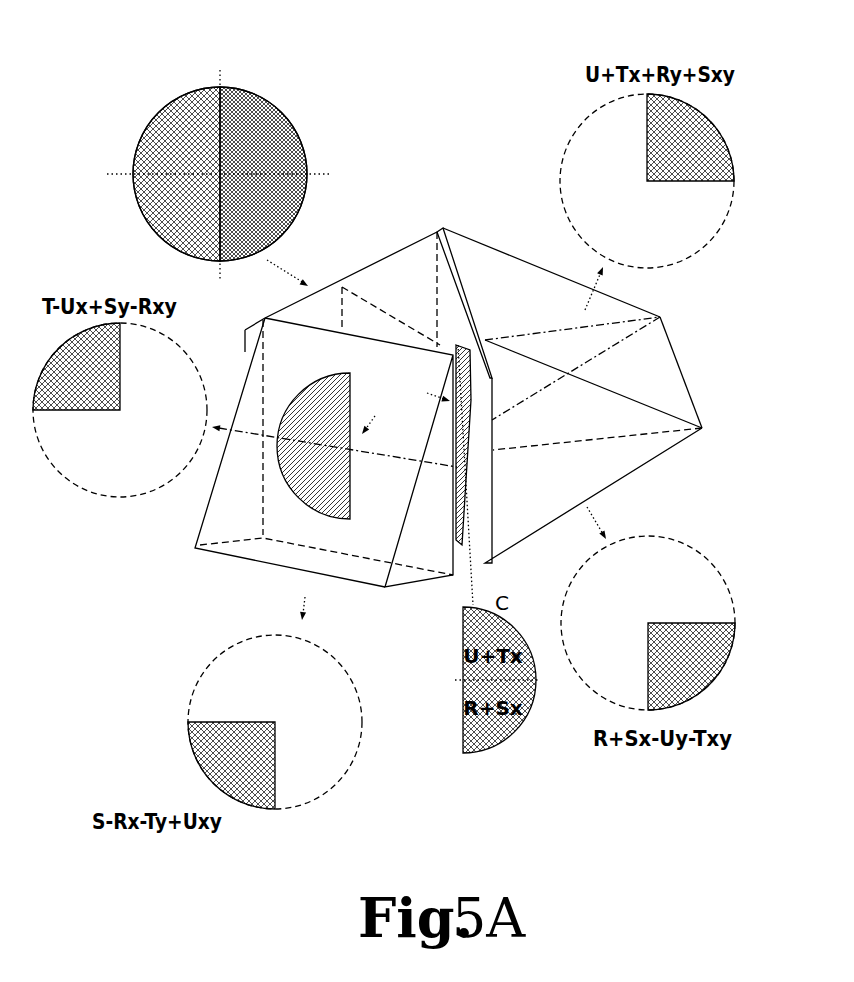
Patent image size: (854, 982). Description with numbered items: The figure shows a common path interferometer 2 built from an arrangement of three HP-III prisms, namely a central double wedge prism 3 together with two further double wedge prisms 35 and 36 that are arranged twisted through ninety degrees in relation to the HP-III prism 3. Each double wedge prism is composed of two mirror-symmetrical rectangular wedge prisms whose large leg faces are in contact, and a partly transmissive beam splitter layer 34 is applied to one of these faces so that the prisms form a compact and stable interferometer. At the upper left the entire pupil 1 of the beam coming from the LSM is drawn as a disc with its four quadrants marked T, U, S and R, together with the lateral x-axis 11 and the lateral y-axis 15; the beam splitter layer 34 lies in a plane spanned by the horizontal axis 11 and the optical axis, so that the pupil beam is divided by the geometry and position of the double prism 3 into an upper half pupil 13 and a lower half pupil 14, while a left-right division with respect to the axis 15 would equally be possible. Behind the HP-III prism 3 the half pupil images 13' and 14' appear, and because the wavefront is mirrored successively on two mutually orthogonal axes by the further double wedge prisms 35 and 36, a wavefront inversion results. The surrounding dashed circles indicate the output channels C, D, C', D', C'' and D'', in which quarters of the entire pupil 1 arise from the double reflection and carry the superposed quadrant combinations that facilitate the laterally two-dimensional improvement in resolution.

The pupil 1 is at (217, 145).
The common path interferometer 2 is at (484, 114).
The HP-III prism (double wedge prism) 3 is at (412, 240).
The lateral axis (x-axis) 11 is at (214, 70).
The half pupil 13 is at (296, 165).
The half pupil image 13' is at (490, 371).
The half pupil 14 is at (141, 166).
The half pupil image 14' is at (275, 414).
The lateral axis (y-axis) 15 is at (112, 180).
The partly transmissive beam splitter layer 34 is at (343, 292).
The further double wedge prism 35 is at (677, 353).
The further double wedge prism 36 is at (223, 558).